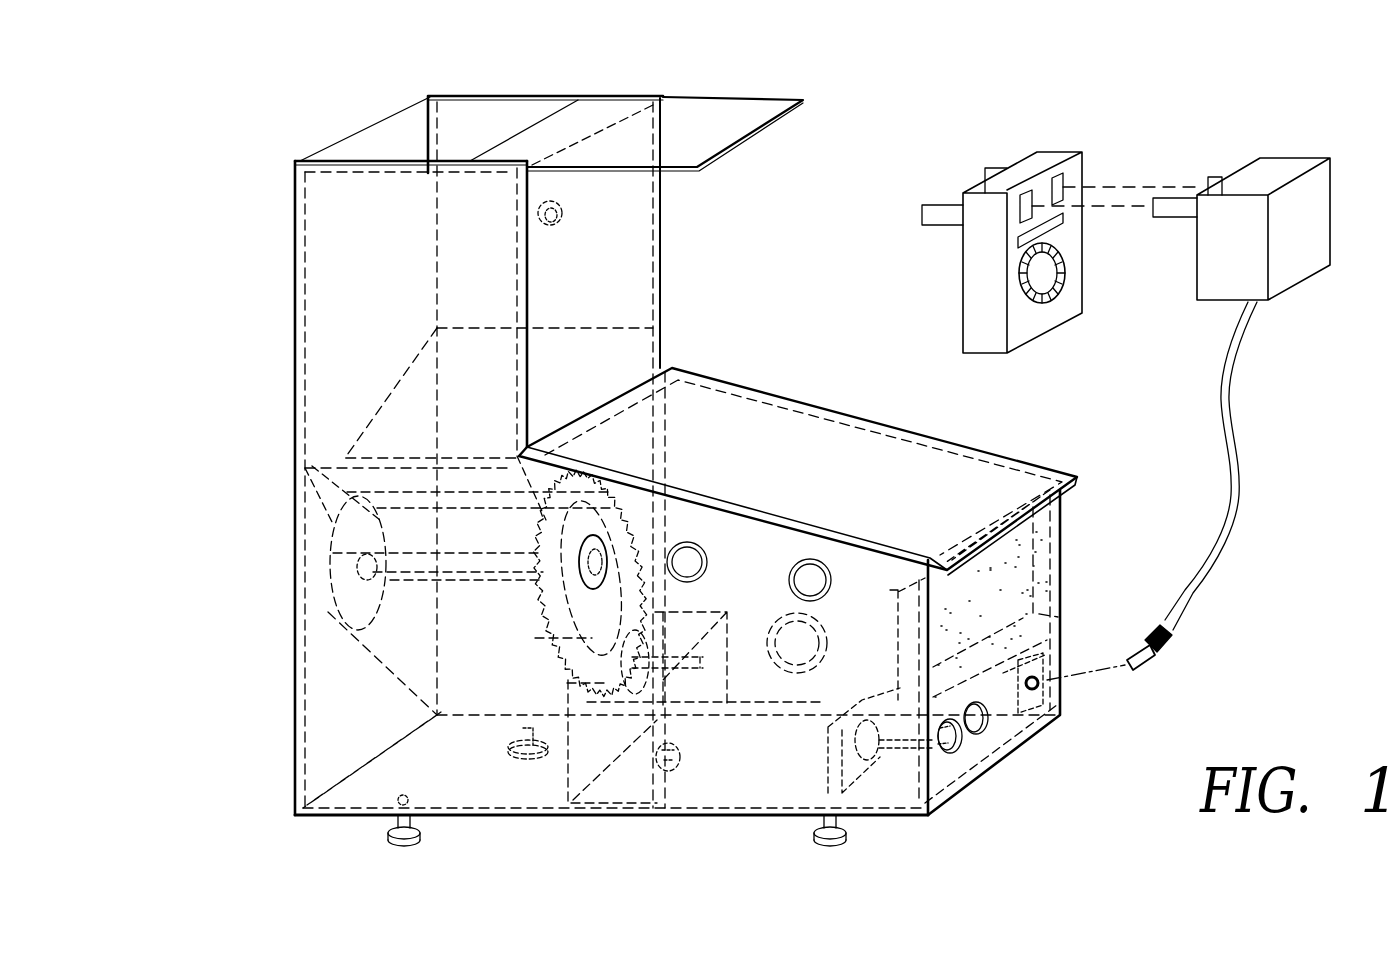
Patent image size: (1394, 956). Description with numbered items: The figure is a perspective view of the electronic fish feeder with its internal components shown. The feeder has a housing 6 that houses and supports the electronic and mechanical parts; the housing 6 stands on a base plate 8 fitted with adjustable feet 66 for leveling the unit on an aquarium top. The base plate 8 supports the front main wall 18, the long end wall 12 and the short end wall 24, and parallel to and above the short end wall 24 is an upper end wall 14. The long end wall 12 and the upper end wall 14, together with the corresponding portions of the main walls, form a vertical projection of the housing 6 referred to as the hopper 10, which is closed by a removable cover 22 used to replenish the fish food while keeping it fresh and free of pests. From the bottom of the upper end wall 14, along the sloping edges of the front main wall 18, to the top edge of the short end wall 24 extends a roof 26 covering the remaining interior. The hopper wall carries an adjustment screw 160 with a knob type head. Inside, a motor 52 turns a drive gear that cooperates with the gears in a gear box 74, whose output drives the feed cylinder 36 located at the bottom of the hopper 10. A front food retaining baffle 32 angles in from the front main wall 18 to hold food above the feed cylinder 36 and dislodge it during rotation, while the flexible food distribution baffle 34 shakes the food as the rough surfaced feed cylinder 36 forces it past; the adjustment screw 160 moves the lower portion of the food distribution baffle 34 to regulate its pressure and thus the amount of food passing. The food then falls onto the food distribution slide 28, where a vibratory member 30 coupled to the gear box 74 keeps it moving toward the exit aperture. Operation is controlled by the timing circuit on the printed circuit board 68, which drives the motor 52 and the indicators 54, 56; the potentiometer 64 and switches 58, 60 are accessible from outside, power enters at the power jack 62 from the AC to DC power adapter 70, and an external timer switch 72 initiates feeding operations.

The housing 6 is at (293, 806).
The base plate 8 is at (422, 773).
The hopper 10 is at (672, 300).
The long end wall 12 is at (380, 132).
The upper end wall 14 is at (607, 284).
The front main wall 18 is at (365, 272).
The removable cover 22 is at (698, 125).
The short end wall 24 is at (1030, 735).
The roof 26 is at (957, 463).
The food distribution slide 28 is at (410, 673).
The vibratory member 30 is at (687, 707).
The front food retaining baffle 32 is at (335, 485).
The food distribution baffle 34 is at (617, 358).
The feed cylinder 36 is at (355, 592).
The motor 52 is at (755, 765).
The power indicator 54 is at (808, 582).
The indicator 56 is at (686, 564).
The switch 58 is at (985, 733).
The switch 60 is at (957, 757).
The power jack 62 is at (1063, 647).
The potentiometer 64 is at (815, 650).
The adjustable feet 66 is at (835, 842).
The printed circuit board 68 is at (1012, 585).
The AC to DC power adapter 70 is at (1277, 168).
The external timer switch 72 is at (1020, 177).
The gear box 74 is at (640, 790).
The adjustment screw 160 is at (565, 213).